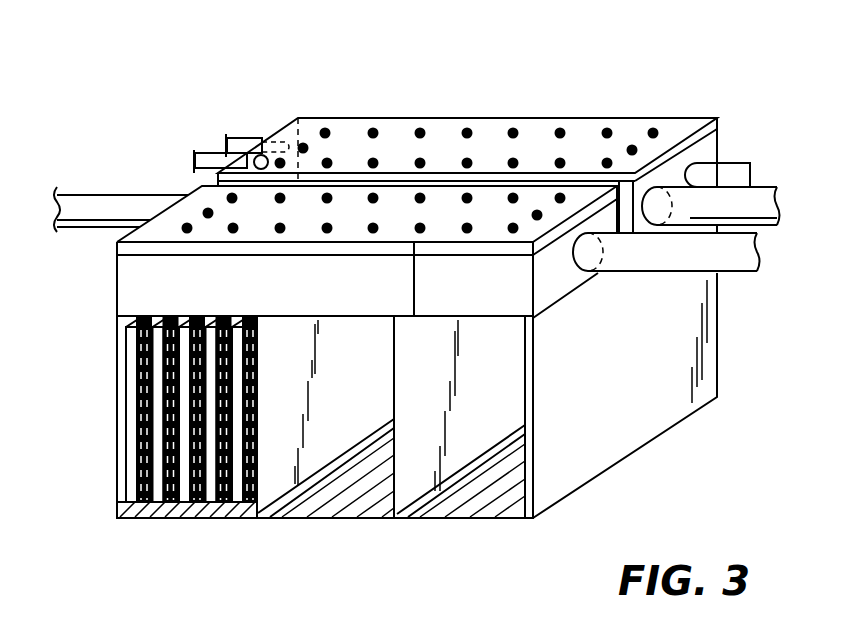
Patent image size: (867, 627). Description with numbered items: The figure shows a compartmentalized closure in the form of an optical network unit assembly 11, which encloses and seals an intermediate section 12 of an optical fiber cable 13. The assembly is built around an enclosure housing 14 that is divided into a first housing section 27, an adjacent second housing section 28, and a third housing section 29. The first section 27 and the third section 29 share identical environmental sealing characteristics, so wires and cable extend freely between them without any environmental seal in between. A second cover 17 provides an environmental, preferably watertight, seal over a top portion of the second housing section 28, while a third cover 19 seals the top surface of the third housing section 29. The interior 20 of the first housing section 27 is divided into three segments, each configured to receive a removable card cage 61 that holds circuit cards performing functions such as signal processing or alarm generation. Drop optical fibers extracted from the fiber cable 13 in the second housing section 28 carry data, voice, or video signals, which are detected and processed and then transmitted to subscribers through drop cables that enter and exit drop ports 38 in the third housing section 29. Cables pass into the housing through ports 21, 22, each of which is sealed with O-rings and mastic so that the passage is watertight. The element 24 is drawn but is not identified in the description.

The optical network unit assembly 11 is at (151, 62).
The intermediate section 12 is at (597, 272).
The optical fiber cable 13 is at (98, 205).
The enclosure housing 14 is at (118, 371).
The second cover 17 is at (252, 198).
The third cover 19 is at (493, 132).
The interior 20 is at (452, 495).
The port 21 is at (612, 195).
The port 22 is at (177, 202).
The filter element 24 is at (238, 470).
The first housing section 27 is at (567, 466).
The second housing section 28 is at (133, 273).
The third housing section 29 is at (712, 150).
The drop port 38 is at (700, 176).
The card cage 61 is at (120, 447).